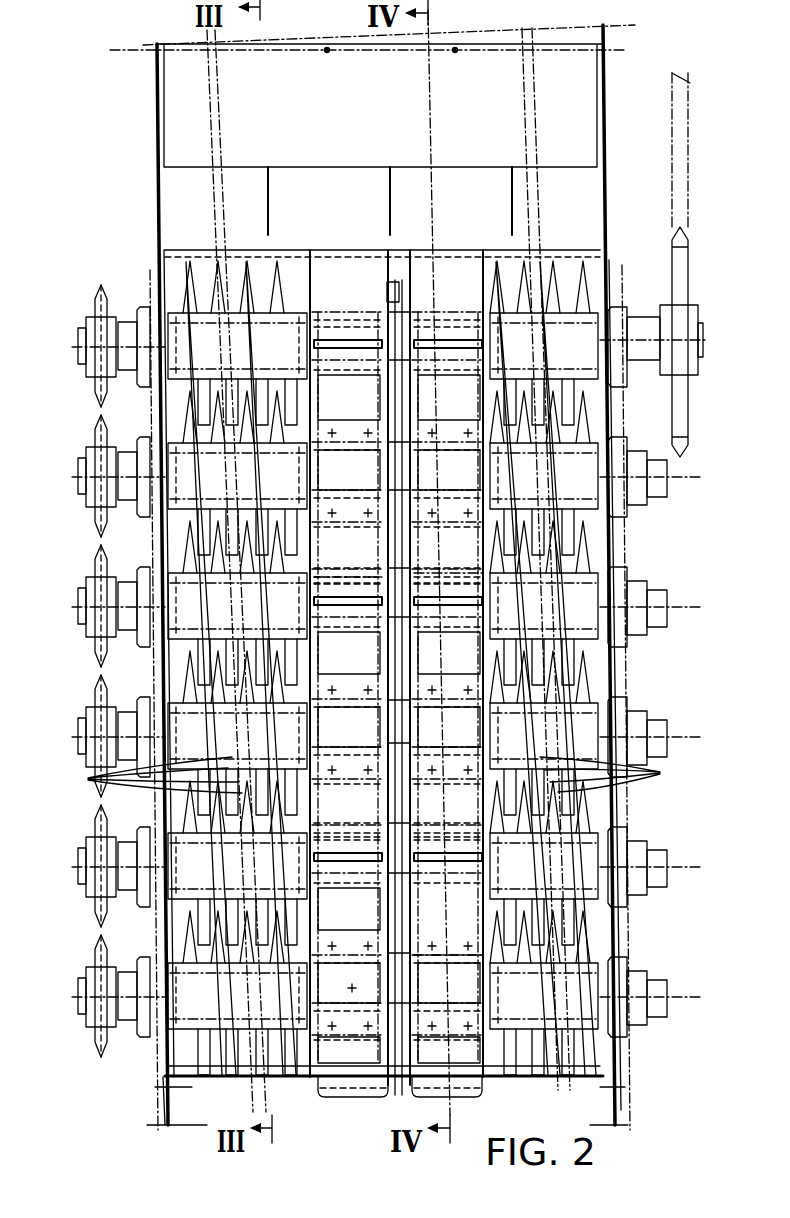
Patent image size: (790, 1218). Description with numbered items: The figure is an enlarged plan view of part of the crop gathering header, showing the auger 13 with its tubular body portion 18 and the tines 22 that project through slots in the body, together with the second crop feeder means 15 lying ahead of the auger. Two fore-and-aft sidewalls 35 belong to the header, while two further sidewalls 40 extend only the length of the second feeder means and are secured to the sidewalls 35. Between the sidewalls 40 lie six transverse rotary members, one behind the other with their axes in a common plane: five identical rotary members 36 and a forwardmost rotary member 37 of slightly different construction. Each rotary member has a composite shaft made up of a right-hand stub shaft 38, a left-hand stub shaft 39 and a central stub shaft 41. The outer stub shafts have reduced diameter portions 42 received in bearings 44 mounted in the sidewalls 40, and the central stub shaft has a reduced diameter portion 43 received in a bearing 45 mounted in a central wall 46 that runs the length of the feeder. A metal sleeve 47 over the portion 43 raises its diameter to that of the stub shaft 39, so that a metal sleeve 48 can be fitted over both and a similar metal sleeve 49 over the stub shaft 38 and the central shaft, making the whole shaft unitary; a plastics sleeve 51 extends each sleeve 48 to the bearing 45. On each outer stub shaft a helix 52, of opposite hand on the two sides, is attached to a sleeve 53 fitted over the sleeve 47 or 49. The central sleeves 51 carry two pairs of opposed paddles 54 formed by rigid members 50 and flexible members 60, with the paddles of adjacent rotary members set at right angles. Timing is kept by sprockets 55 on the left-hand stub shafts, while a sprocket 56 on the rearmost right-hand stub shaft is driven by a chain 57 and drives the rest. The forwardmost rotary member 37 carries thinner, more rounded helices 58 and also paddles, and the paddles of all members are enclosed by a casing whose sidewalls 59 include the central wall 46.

The auger 13 is at (190, 177).
The second crop feeder means 15 is at (128, 1093).
The tubular body portion 18 is at (463, 170).
The tines 22 is at (390, 193).
The sidewalls 35 is at (156, 248).
The rotary members 36 is at (627, 384).
The forwardmost rotary member 37 is at (640, 945).
The right-hand stub shaft 38 is at (570, 668).
The left-hand stub shaft 39 is at (211, 668).
The further sidewalls 40 is at (160, 1108).
The central stub shaft 41 is at (462, 1001).
The reduced diameter portion 42 is at (88, 733).
The reduced diameter portion 43 is at (383, 740).
The bearings 44 is at (156, 702).
The bearing 45 is at (403, 445).
The central wall 46 is at (395, 258).
The metal sleeve 47 is at (350, 458).
The metal sleeve 48 is at (271, 668).
The metal sleeve 49 is at (528, 668).
The rigid members 50 is at (353, 435).
The sleeve 51 is at (355, 700).
The helix 52 is at (377, 775).
The sleeve 53 is at (312, 752).
The paddles 54 is at (342, 338).
The sprockets 55 is at (96, 305).
The sprocket 56 is at (684, 294).
The chain 57 is at (685, 190).
The helix 58 is at (290, 1040).
The sidewalls 59 is at (308, 262).
The flexible members 60 is at (350, 403).